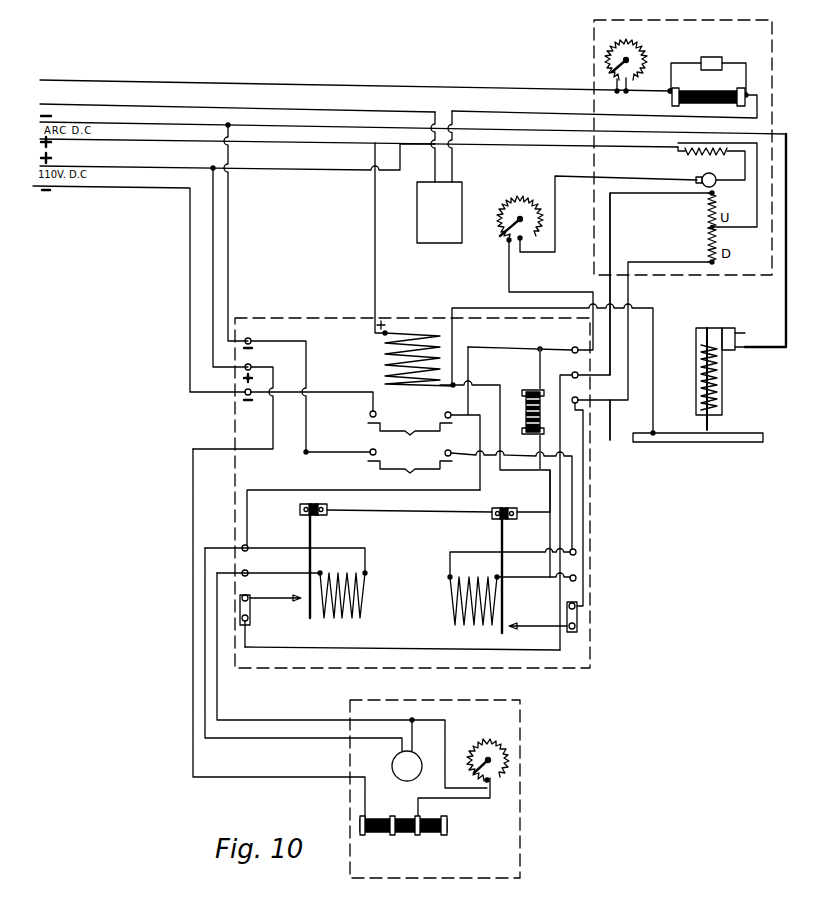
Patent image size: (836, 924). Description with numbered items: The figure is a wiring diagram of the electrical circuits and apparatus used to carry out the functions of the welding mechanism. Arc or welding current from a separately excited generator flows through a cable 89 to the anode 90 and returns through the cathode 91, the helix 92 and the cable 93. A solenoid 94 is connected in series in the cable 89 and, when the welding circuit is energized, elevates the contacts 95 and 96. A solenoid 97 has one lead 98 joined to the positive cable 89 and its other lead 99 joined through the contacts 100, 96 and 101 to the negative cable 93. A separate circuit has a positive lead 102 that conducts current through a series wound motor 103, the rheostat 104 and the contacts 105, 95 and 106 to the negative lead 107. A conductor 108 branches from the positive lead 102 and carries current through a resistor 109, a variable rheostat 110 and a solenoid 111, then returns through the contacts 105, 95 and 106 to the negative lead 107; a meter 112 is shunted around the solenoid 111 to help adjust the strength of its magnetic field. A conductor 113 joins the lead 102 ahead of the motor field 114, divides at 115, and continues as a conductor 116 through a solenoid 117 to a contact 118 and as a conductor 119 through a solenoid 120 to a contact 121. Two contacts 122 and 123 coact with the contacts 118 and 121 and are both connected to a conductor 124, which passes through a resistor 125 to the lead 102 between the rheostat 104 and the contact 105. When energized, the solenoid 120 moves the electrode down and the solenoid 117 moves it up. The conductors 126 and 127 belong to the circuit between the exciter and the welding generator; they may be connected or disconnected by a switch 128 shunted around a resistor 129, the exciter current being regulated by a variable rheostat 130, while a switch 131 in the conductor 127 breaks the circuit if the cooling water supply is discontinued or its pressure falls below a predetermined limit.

The cable 89 is at (373, 216).
The anode 90 is at (718, 444).
The cathode 91 is at (702, 426).
The helix 92 is at (722, 372).
The cable 93 is at (786, 305).
The solenoid 94 is at (383, 362).
The contact 95 is at (410, 420).
The contact 96 is at (410, 459).
The solenoid 97 is at (450, 592).
The lead 98 is at (488, 397).
The lead 99 is at (468, 552).
The contact 100 is at (450, 446).
The contact 101 is at (369, 450).
The positive lead 102 is at (520, 147).
The series wound motor 103 is at (700, 178).
The rheostat 104 is at (503, 237).
The contact 105 is at (448, 411).
The contact 106 is at (369, 414).
The negative lead 107 is at (145, 189).
The conductor 108 is at (193, 489).
The resistor 109 is at (409, 836).
The variable rheostat 110 is at (500, 778).
The solenoid 111 is at (362, 612).
The meter 112 is at (391, 768).
The conductor 113 is at (757, 193).
The motor field 114 is at (707, 159).
The dividing point 115 is at (706, 229).
The conductor 116 is at (611, 256).
The solenoid 117 is at (705, 212).
The contact 118 is at (281, 600).
The conductor 119 is at (610, 432).
The solenoid 120 is at (705, 254).
The contact 121 is at (553, 629).
The contact 122 is at (318, 534).
The contact 123 is at (507, 536).
The conductor 124 is at (547, 490).
The resistor 125 is at (514, 426).
The conductor 126 is at (279, 84).
The conductor 127 is at (272, 110).
The switch 128 is at (713, 56).
The resistor 129 is at (712, 87).
The variable rheostat 130 is at (640, 53).
The switch 131 is at (430, 245).